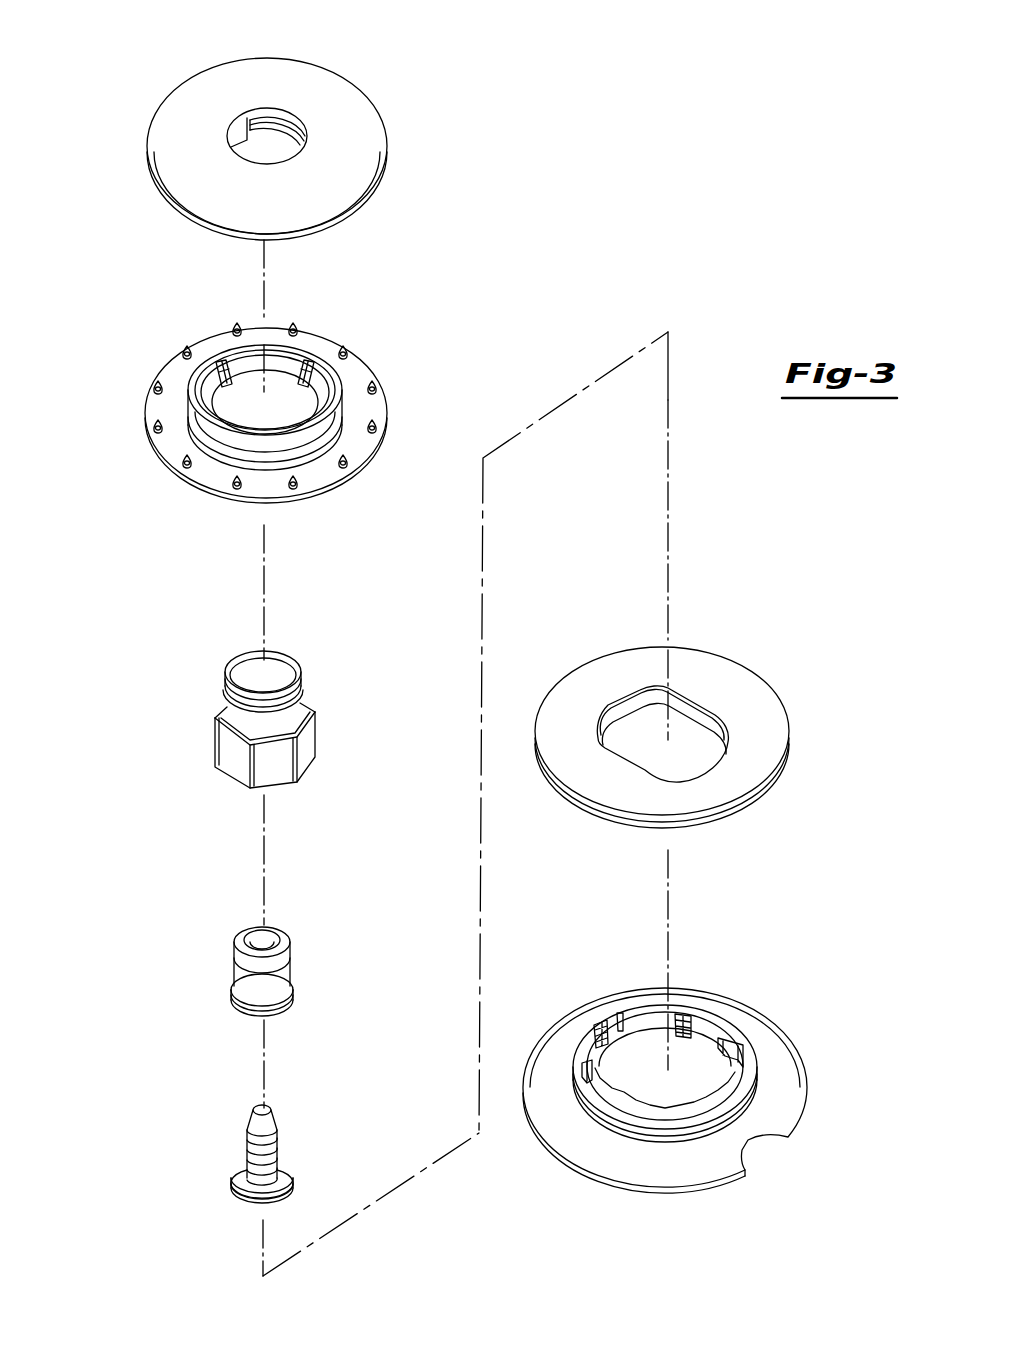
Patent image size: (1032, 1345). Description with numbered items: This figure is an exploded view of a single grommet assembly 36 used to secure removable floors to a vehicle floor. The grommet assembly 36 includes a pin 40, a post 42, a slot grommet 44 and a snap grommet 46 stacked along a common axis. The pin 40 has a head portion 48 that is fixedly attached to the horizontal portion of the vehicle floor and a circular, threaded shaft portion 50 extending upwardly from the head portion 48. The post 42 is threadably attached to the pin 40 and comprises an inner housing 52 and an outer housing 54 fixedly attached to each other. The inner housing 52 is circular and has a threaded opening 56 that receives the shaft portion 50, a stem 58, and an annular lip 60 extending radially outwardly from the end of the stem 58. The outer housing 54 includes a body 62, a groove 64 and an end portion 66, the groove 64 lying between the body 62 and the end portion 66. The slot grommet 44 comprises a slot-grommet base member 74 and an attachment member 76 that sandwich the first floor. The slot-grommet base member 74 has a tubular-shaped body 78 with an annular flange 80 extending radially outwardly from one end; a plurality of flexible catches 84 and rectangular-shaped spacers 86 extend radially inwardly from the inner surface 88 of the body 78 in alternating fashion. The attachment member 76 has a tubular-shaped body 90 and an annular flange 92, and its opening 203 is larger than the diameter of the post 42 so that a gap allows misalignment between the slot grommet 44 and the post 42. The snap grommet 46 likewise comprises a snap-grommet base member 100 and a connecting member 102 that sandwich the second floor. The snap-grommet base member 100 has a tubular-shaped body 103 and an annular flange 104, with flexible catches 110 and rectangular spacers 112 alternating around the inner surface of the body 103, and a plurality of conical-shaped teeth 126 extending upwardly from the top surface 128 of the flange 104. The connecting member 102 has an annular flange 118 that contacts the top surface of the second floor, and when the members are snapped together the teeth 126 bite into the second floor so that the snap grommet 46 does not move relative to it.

The grommet assembly 36 is at (154, 847).
The pin 40 is at (294, 1106).
The post 42 is at (329, 779).
The slot grommet 44 is at (830, 831).
The snap grommet 46 is at (486, 197).
The head portion 48 is at (236, 1175).
The shaft portion 50 is at (250, 1145).
The inner housing 52 is at (304, 939).
The outer housing 54 is at (329, 656).
The opening 56 is at (252, 936).
The stem 58 is at (242, 972).
The lip 60 is at (236, 1003).
The body 62 is at (233, 748).
The groove 64 is at (214, 697).
The end portion 66 is at (243, 666).
The slot-grommet base member 74 is at (779, 946).
The attachment member 76 is at (820, 674).
The tubular-shaped body 78 is at (676, 1138).
The flange 80 is at (790, 1088).
The flexible catches 84 is at (640, 1021).
The spacers 86 is at (605, 1020).
The inner surface 88 is at (718, 1038).
The tubular-shaped body 90 is at (620, 720).
The flange 92 is at (710, 667).
The snap-grommet base member 100 is at (436, 294).
The connecting member 102 is at (448, 62).
The tubular-shaped body 103 is at (200, 425).
The flange 104 is at (393, 443).
The flexible catches 110 is at (323, 373).
The spacers 112 is at (215, 386).
The flange 118 is at (365, 150).
The conical-shaped teeth 126 is at (230, 487).
The top surface 128 is at (360, 376).
The opening 203 is at (673, 765).